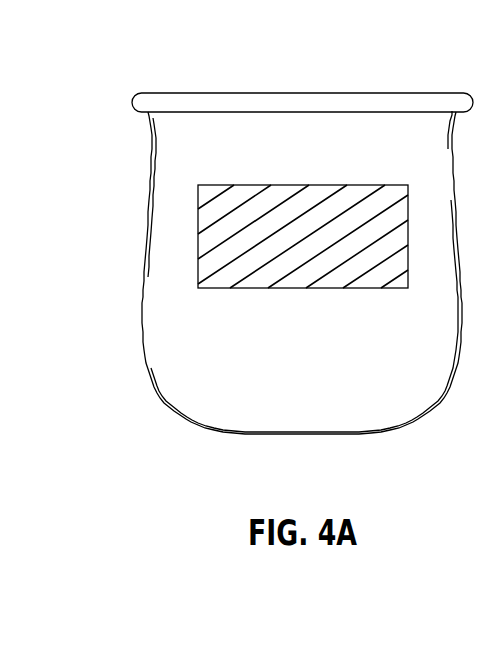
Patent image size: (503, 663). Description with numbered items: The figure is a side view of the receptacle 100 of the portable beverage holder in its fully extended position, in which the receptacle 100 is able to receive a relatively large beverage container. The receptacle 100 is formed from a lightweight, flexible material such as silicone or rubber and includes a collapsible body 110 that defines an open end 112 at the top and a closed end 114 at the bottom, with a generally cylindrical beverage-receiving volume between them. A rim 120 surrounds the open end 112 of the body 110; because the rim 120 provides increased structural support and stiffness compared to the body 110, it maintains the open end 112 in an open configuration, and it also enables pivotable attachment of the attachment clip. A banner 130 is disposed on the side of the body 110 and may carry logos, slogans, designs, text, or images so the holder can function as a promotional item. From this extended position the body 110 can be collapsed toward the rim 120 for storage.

The receptacle 100 is at (219, 71).
The body 110 is at (286, 292).
The open end 112 is at (150, 143).
The closed end 114 is at (247, 436).
The rim 120 is at (422, 100).
The banner 130 is at (198, 227).